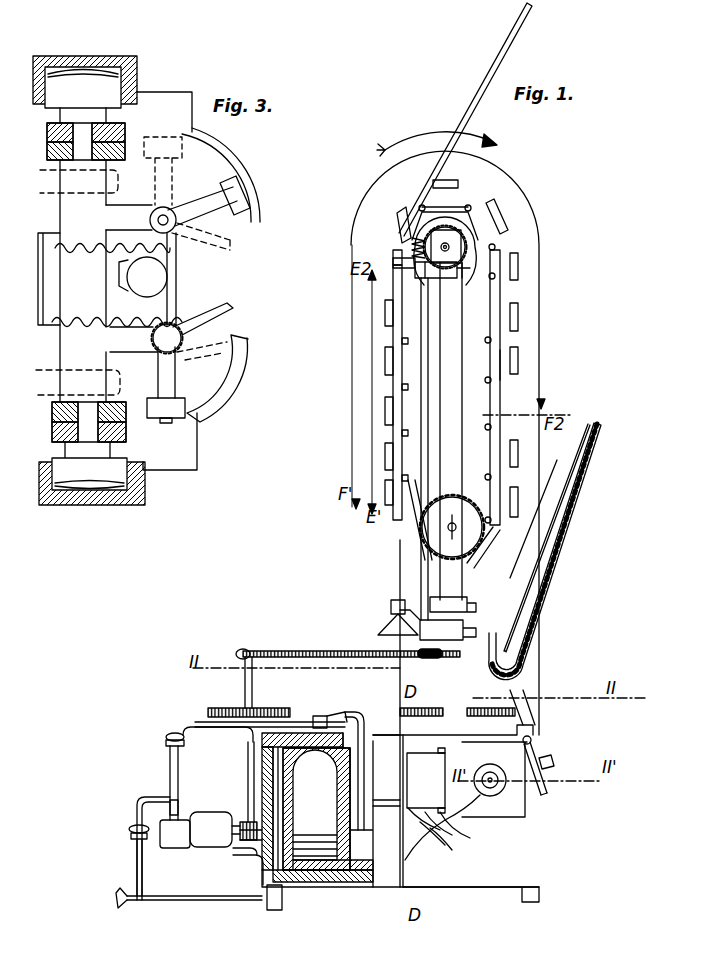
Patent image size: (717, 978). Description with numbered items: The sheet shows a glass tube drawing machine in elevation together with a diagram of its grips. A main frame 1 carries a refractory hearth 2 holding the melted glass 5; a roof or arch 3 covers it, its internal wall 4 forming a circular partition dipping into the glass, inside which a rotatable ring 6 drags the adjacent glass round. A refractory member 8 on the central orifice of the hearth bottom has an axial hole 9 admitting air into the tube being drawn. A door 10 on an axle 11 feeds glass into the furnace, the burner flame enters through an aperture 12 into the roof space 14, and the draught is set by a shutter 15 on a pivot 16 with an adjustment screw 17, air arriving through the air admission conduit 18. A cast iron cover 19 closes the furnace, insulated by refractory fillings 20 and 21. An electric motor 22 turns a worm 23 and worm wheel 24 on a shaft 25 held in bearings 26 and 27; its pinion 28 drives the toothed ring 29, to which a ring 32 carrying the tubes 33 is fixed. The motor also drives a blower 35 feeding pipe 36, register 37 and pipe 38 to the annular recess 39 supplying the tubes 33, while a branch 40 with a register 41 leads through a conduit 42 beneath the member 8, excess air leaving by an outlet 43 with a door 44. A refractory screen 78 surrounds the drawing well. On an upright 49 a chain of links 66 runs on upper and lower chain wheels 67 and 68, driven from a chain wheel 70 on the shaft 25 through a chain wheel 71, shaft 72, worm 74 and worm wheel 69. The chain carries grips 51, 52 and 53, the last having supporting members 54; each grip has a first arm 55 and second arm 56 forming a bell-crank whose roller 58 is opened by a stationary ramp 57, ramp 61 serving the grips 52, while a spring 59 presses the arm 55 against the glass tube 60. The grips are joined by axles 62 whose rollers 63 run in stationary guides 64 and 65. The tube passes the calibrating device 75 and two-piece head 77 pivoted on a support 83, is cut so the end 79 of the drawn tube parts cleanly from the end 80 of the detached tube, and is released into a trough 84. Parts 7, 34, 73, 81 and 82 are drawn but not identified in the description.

In FIG. 1, the main frame 1 is at (320, 880).
In FIG. 1, the hearth 2 is at (332, 874).
In FIG. 1, the roof or arch 3 is at (145, 798).
In FIG. 1, the internal wall 4 is at (352, 855).
In FIG. 1, the glass 5 is at (338, 850).
In FIG. 1, the ring 6 is at (365, 850).
In FIG. 1, the housing wall 7 is at (398, 905).
In FIG. 1, the refractory member 8 is at (445, 845).
In FIG. 1, the axial hole 9 is at (452, 850).
In FIG. 1, the door 10 is at (452, 835).
In FIG. 1, the axle 11 is at (470, 838).
In FIG. 1, the aperture 12 is at (498, 790).
In FIG. 1, the roof space 14 is at (275, 797).
In FIG. 1, the shutter 15 is at (545, 784).
In FIG. 1, the pivot 16 is at (530, 740).
In FIG. 1, the adjustment screw 17 is at (547, 765).
In FIG. 1, the air admission conduit 18 is at (505, 788).
In FIG. 1, the cover 19 is at (262, 750).
In FIG. 1, the filling of powdered refractory material 20 is at (305, 773).
In FIG. 1, the filling of powdered refractory material 21 is at (337, 868).
In FIG. 1, the electric motor 22 is at (207, 838).
In FIG. 1, the worm 23 is at (248, 842).
In FIG. 1, the worm wheel 24 is at (253, 845).
In FIG. 1, the shaft 25 is at (247, 686).
In FIG. 1, the bearing 26 is at (248, 733).
In FIG. 1, the bearing 27 is at (268, 852).
In FIG. 1, the pinion 28 is at (295, 712).
In FIG. 1, the toothed ring 29 is at (520, 707).
In FIG. 1, the ring 32 is at (338, 718).
In FIG. 1, the tubes 33 is at (358, 723).
In FIG. 1, the conduit 34 is at (440, 830).
In FIG. 1, the air blower or fan 35 is at (173, 838).
In FIG. 1, the pipe 36 is at (178, 815).
In FIG. 1, the regulating register 37 is at (166, 740).
In FIG. 1, the pipe 38 is at (172, 735).
In FIG. 1, the annular recess 39 is at (325, 725).
In FIG. 1, the branch 40 is at (142, 832).
In FIG. 1, the register 41 is at (137, 838).
In FIG. 1, the conduit 42 is at (140, 895).
In FIG. 1, the outlet 43 is at (128, 882).
In FIG. 1, the door 44 is at (128, 904).
In FIG. 1, the upright 49 is at (446, 305).
In FIG. 3, the grips 51 is at (170, 352).
In FIG. 1, the grips 51 is at (445, 208).
In FIG. 1, the grips 52 is at (398, 235).
In FIG. 1, the grips 53 is at (500, 347).
In FIG. 1, the supporting members 54 is at (395, 252).
In FIG. 3, the first arm 55 is at (205, 318).
In FIG. 3, the second arm 56 is at (170, 378).
In FIG. 3, the stationary ramp 57 is at (224, 389).
In FIG. 3, the roller 58 is at (173, 410).
In FIG. 3, the spring 59 is at (78, 322).
In FIG. 3, the glass tube 60 is at (152, 277).
In FIG. 3, the stationary ramp 61 is at (222, 165).
In FIG. 3, the axles 62 is at (70, 214).
In FIG. 3, the rollers 63 is at (103, 81).
In FIG. 3, the stationary guide 64 is at (137, 78).
In FIG. 3, the stationary guide 65 is at (105, 500).
In FIG. 3, the links 66 is at (122, 438).
In FIG. 3, the chain wheels 67 is at (50, 175).
In FIG. 1, the chain wheels 67 is at (478, 244).
In FIG. 1, the chain wheels 68 is at (487, 528).
In FIG. 1, the worm wheel 69 is at (457, 208).
In FIG. 1, the chain wheel 70 is at (242, 651).
In FIG. 1, the chain wheel 71 is at (533, 651).
In FIG. 1, the shaft 72 is at (427, 448).
In FIG. 1, the shaft 73 is at (268, 651).
In FIG. 1, the worm 74 is at (410, 242).
In FIG. 1, the calibrating device 75 is at (400, 610).
In FIG. 1, the head 77 is at (392, 622).
In FIG. 1, the cover or screen 78 is at (380, 807).
In FIG. 1, the end of the drawn tube 79 is at (400, 254).
In FIG. 1, the end of the detached tube 80 is at (415, 262).
In FIG. 1, the pin 81 is at (490, 276).
In FIG. 1, the clamp 82 is at (462, 632).
In FIG. 1, the common support 83 is at (462, 602).
In FIG. 1, the box or trough 84 is at (533, 685).